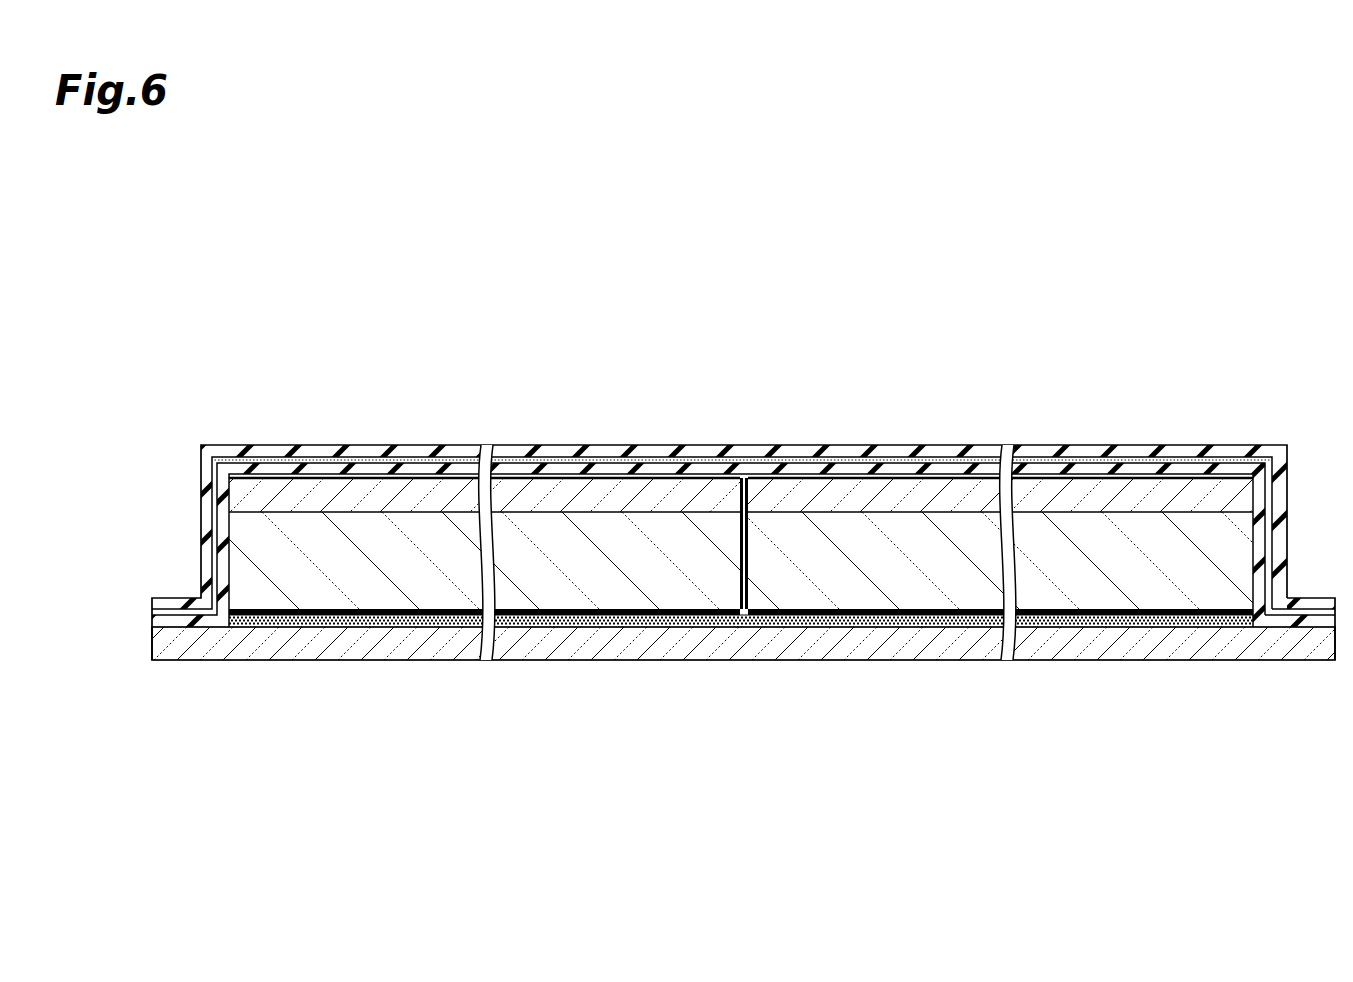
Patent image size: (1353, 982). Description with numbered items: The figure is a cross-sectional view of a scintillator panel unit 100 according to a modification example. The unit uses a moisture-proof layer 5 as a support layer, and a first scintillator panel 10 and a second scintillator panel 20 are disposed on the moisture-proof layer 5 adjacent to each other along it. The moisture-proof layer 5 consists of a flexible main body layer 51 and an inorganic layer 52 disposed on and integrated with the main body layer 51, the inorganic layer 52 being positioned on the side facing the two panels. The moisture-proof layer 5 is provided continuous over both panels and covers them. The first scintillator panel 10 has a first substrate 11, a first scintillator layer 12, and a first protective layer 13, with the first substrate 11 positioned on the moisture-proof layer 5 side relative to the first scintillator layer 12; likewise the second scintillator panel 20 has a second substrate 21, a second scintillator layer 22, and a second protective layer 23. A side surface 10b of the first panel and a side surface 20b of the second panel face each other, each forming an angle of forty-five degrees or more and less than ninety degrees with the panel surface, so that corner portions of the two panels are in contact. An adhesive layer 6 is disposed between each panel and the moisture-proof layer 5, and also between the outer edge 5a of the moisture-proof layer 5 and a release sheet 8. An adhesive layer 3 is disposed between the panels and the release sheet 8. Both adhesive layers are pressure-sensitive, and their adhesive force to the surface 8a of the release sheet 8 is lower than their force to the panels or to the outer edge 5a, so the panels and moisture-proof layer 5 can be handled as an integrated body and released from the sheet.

The scintillator panel unit 100 is at (1067, 331).
The moisture-proof layer 5 is at (967, 366).
The main body layer 51 is at (878, 453).
The inorganic layer 52 is at (930, 458).
The adhesive layer 6 is at (604, 468).
The outer edge 5a is at (1300, 598).
The first scintillator panel 10 is at (308, 468).
The first substrate 11 is at (383, 492).
The first scintillator layer 12 is at (430, 595).
The first protective layer 13 is at (357, 615).
The side surface 10b is at (748, 552).
The second scintillator panel 20 is at (1166, 462).
The second substrate 21 is at (1087, 495).
The second scintillator layer 22 is at (1078, 592).
The second protective layer 23 is at (1128, 615).
The side surface 20b is at (738, 525).
The release sheet 8 is at (720, 640).
The surface 8a is at (963, 612).
The adhesive layer 3 is at (300, 637).